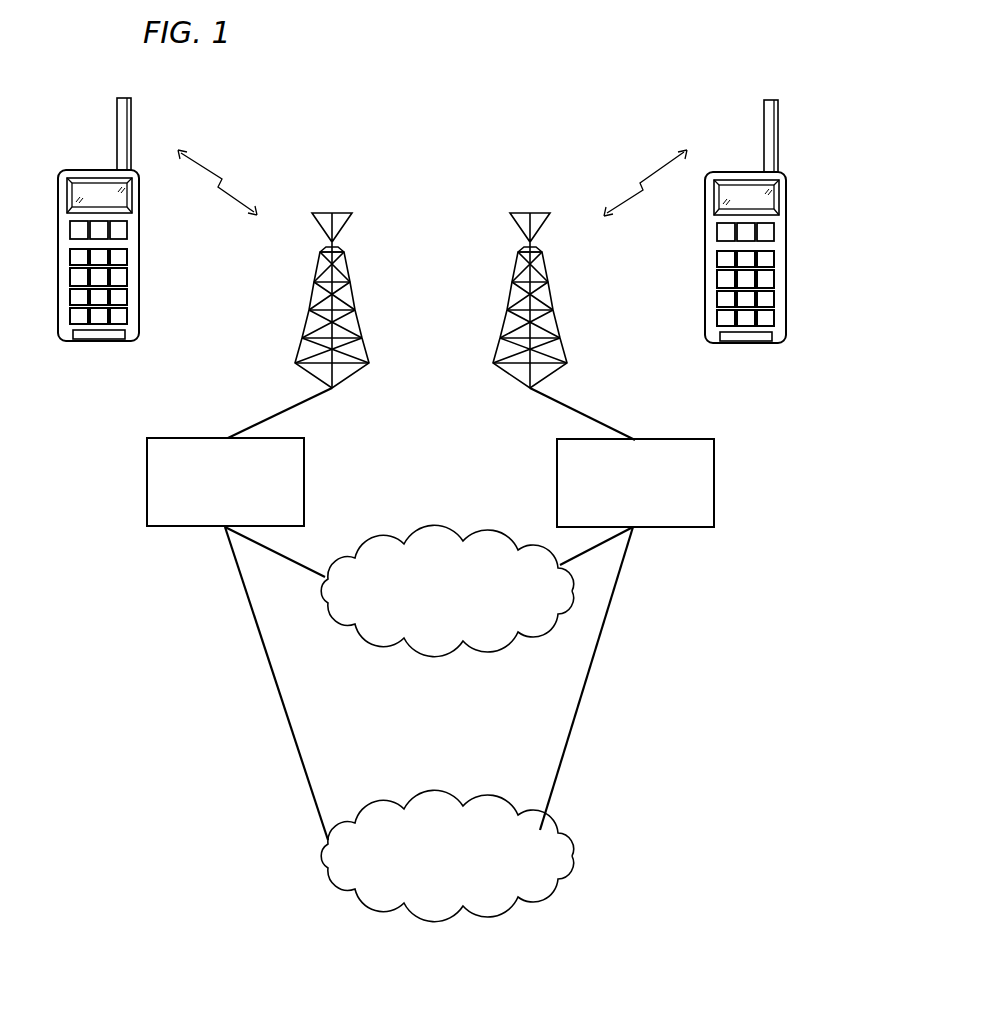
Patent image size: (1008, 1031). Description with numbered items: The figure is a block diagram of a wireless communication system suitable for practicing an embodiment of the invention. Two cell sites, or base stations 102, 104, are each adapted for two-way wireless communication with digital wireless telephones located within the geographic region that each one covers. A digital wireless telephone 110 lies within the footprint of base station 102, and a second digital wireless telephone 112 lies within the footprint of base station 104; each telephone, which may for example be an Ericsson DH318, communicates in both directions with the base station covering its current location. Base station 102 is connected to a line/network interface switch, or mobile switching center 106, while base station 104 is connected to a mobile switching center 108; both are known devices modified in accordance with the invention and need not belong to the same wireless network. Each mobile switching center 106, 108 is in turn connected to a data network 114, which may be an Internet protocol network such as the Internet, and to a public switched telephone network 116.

The base station 102 is at (555, 310).
The base station 104 is at (362, 337).
The mobile switching center 106 is at (715, 482).
The mobile switching center 108 is at (305, 480).
The digital wireless telephone 110 is at (788, 237).
The digital wireless telephone 112 is at (140, 292).
The data network 114 is at (457, 525).
The public switched telephone network 116 is at (587, 868).